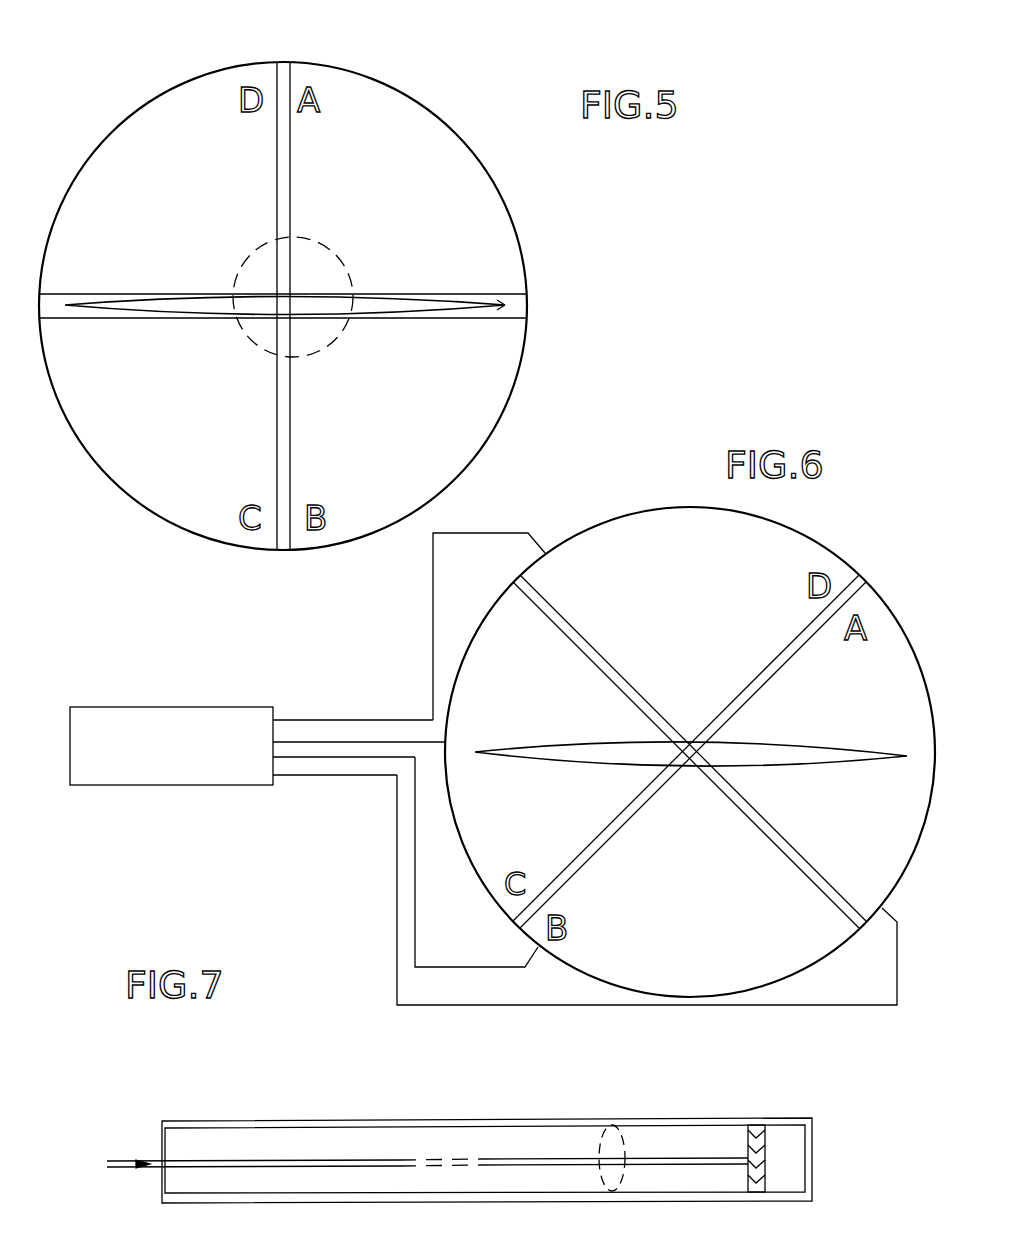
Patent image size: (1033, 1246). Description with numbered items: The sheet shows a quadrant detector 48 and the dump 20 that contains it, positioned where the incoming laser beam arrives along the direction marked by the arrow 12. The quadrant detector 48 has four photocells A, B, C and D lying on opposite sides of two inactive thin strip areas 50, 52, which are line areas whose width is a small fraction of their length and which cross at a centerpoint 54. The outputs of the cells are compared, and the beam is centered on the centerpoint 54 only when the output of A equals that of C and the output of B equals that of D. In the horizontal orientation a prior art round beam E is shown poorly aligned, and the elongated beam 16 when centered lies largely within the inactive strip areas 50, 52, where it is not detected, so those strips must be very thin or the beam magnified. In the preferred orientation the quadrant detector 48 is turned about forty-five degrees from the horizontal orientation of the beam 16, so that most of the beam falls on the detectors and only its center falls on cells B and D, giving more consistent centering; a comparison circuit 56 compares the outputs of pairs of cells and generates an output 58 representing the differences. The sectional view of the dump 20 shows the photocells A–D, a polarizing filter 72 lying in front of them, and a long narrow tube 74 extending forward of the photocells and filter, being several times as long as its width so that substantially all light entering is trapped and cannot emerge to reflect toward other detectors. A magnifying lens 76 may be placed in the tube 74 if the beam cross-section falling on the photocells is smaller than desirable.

In FIG. 5, the light beam 12 is at (283, 22).
In FIG. 6, the light beam 12 is at (690, 452).
In FIG. 5, the beam 16 is at (377, 292).
In FIG. 6, the beam 16 is at (792, 742).
In FIG. 7, the beam 16 is at (348, 1161).
In FIG. 7, the dump 20 is at (487, 1128).
In FIG. 5, the quadrant detector 48 is at (425, 84).
In FIG. 6, the quadrant detector 48 is at (800, 522).
In FIG. 5, the strip area 50 is at (511, 298).
In FIG. 5, the strip area 52 is at (287, 550).
In FIG. 5, the centerpoint 54 is at (293, 296).
In FIG. 6, the comparison circuit 56 is at (165, 707).
In FIG. 6, the output 58 is at (165, 786).
In FIG. 7, the polarizing filter 72 is at (747, 1137).
In FIG. 7, the tube 74 is at (268, 1122).
In FIG. 7, the magnifying lens 76 is at (600, 1136).